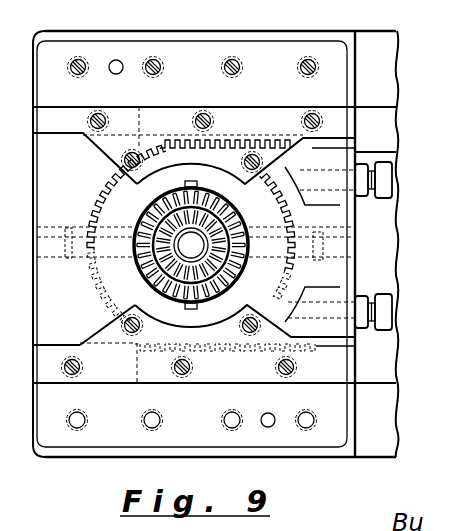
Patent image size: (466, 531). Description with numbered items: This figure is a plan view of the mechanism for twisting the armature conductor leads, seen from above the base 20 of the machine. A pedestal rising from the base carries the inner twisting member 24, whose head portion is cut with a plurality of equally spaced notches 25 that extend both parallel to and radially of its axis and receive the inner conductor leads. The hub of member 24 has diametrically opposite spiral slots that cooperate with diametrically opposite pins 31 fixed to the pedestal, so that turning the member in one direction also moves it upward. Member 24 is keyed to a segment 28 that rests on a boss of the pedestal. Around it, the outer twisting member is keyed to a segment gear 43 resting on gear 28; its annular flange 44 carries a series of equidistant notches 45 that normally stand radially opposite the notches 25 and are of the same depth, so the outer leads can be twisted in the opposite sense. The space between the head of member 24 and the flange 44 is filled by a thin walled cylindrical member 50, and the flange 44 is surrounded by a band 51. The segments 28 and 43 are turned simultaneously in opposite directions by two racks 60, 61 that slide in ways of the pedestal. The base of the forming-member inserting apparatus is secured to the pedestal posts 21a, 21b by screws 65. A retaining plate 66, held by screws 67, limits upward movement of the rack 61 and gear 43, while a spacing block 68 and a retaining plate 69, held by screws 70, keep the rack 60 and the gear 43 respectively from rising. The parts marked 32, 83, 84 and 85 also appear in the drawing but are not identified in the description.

The base 20 is at (373, 32).
The post 21a is at (207, 52).
The post 21b is at (103, 432).
The inner twisting member 24 is at (204, 245).
The notches 25 is at (191, 245).
The segment 28 is at (100, 288).
The pins 31 is at (63, 245).
The hub sleeve 32 is at (191, 252).
The segment gear 43 is at (112, 196).
The annular flange 44 is at (167, 246).
The notches 45 is at (173, 254).
The thin walled cylindrical member 50 is at (206, 245).
The band 51 is at (214, 245).
The rack 60 is at (376, 386).
The rack 61 is at (371, 117).
The screws 65 is at (305, 58).
The retaining plate 66 is at (100, 148).
The screws 67 is at (110, 121).
The spacing block 68 is at (74, 345).
The retaining plate 69 is at (103, 336).
The screws 70 is at (80, 368).
The bolt 83 is at (393, 182).
The tab 84 is at (339, 207).
The frame rail 85 is at (358, 163).